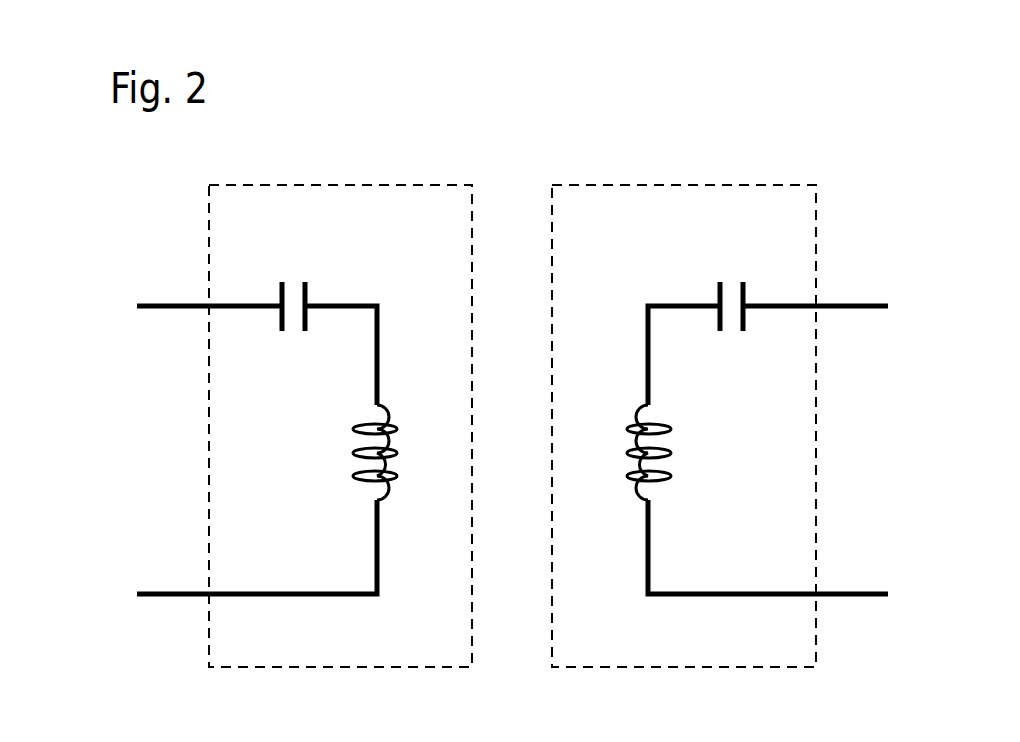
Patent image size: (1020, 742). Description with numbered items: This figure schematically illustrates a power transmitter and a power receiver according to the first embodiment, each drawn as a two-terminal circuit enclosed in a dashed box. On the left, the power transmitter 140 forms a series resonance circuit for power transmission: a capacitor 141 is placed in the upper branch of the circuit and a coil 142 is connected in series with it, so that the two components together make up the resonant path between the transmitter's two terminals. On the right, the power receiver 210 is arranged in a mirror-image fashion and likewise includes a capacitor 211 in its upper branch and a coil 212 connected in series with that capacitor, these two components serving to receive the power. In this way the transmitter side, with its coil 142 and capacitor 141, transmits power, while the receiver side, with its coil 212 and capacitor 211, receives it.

The power transmitter 140 is at (340, 185).
The capacitor 141 is at (292, 272).
The coil 142 is at (343, 453).
The power receiver 210 is at (684, 185).
The capacitor 211 is at (732, 272).
The coil 212 is at (678, 453).